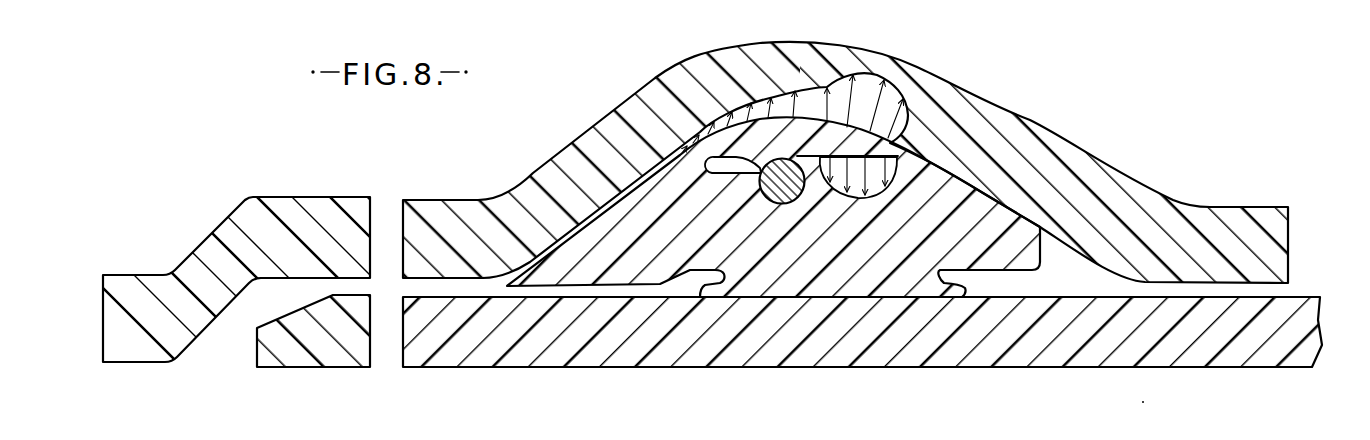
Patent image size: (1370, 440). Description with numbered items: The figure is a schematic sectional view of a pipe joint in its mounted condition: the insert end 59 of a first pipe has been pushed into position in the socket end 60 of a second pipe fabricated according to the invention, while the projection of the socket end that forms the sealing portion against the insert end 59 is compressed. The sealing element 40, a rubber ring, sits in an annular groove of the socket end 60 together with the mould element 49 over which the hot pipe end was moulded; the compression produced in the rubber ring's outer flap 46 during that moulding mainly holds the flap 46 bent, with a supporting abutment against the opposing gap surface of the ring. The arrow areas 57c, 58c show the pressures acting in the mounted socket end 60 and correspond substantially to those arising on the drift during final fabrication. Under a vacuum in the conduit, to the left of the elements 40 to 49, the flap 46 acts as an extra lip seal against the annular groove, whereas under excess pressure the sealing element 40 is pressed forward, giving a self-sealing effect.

The rubber ring sealing element 40 is at (623, 237).
The flap 46 is at (820, 143).
The mould element 49 is at (775, 187).
The arrow area 57c is at (878, 88).
The arrow area 58c is at (878, 192).
The insert end 59 is at (1013, 306).
The socket end 60 is at (340, 205).